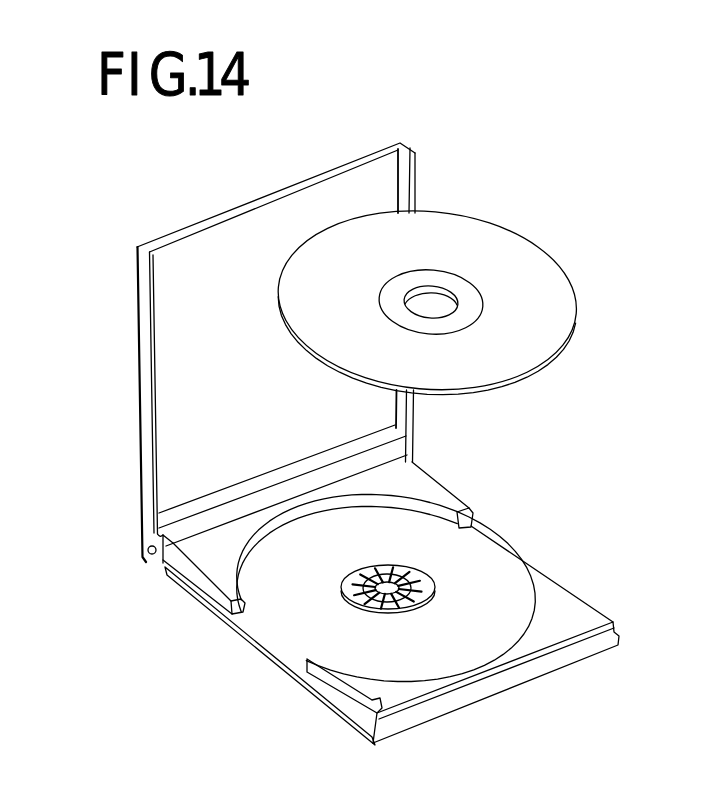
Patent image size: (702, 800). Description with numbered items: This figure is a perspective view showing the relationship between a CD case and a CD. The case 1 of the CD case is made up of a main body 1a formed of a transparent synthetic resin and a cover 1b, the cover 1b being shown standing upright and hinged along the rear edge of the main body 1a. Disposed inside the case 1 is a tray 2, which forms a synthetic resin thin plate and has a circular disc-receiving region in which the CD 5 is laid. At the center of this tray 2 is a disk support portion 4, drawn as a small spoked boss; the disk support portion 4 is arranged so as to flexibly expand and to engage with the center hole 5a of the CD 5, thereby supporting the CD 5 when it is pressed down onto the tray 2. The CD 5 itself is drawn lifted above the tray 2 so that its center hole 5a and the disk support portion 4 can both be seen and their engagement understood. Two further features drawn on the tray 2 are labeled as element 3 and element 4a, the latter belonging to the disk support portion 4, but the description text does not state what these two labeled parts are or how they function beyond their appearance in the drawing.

The case 1 is at (495, 702).
The main body 1a is at (426, 705).
The cover 1b is at (142, 320).
The tray 2 is at (289, 625).
The disc holding claws 3 is at (406, 574).
The disk support portion 4 is at (349, 605).
The hub ring 4a is at (352, 578).
The CD 5 is at (562, 329).
The center hole 5a is at (432, 305).